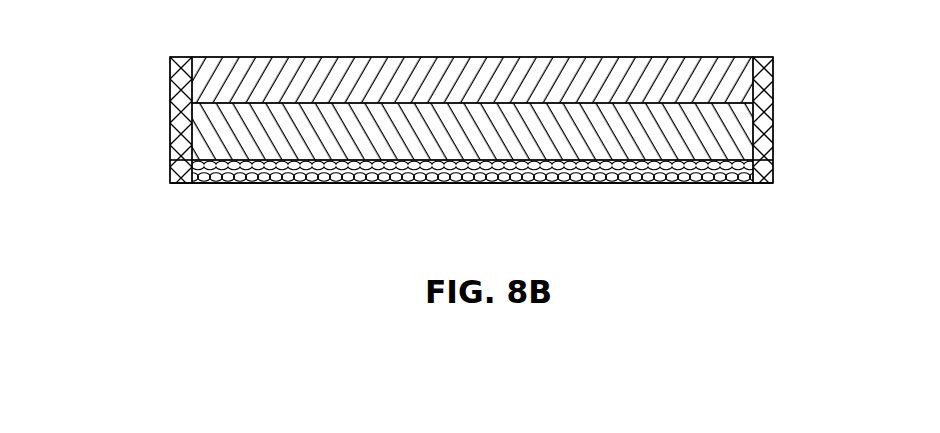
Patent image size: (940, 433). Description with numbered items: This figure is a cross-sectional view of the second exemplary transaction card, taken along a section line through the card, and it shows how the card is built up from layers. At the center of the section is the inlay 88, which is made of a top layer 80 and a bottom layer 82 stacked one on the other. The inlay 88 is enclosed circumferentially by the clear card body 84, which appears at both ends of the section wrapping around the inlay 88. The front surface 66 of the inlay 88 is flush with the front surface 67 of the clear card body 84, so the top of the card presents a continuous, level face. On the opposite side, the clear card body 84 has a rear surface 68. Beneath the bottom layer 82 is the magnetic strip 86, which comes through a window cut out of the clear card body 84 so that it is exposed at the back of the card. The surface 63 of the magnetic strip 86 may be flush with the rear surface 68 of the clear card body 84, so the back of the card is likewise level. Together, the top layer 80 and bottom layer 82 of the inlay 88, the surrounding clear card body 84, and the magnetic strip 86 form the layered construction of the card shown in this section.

The surface of magnetic strip 63 is at (472, 210).
The front surface of inlay 66 is at (471, 94).
The front surface of clear card body 67 is at (488, 97).
The rear surface of clear card body 68 is at (471, 212).
The top layer of inlay 80 is at (519, 80).
The bottom layer of inlay 82 is at (519, 127).
The clear card body 84 is at (462, 158).
The magnetic strip 86 is at (472, 203).
The inlay 88 is at (553, 108).